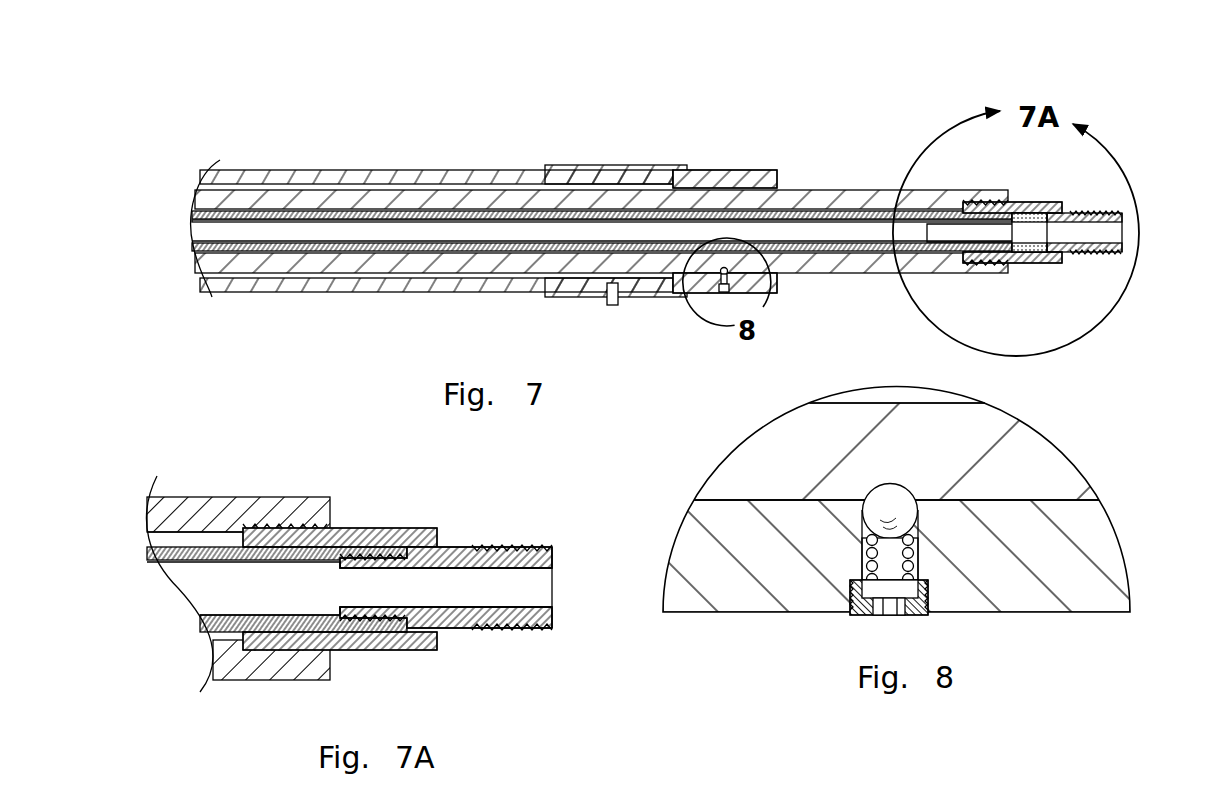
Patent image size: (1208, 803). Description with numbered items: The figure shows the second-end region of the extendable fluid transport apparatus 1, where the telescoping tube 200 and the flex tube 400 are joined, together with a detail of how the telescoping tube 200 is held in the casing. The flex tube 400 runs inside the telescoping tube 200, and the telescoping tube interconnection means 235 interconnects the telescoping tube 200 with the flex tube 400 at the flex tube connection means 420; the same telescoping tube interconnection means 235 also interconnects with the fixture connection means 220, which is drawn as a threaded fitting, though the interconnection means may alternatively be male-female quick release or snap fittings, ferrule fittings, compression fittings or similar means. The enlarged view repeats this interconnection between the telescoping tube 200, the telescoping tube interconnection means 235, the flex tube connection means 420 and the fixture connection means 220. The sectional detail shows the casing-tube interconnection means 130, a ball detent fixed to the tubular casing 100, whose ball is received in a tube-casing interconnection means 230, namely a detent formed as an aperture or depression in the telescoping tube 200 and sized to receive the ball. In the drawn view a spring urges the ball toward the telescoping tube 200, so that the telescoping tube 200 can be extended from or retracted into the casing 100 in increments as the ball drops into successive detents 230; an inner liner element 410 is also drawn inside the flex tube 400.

In FIG. 7, the extendable fluid transport apparatus 1 is at (407, 155).
In FIG. 7, the tubular casing 100 is at (340, 170).
In FIG. 7, the casing-tube interconnection means 130 is at (503, 170).
In FIG. 8, the casing-tube interconnection means 130 is at (868, 615).
In FIG. 7, the telescoping tube 200 is at (252, 263).
In FIG. 7A, the telescoping tube 200 is at (258, 508).
In FIG. 8, the telescoping tube 200 is at (767, 442).
In FIG. 7, the fixture connection means 220 is at (1100, 207).
In FIG. 7A, the fixture connection means 220 is at (505, 547).
In FIG. 7, the tube-casing interconnection means 230 is at (617, 165).
In FIG. 8, the tube-casing interconnection means 230 is at (890, 485).
In FIG. 7, the telescoping tube interconnection means 235 is at (1040, 203).
In FIG. 7A, the telescoping tube interconnection means 235 is at (380, 535).
In FIG. 7, the flex tube 400 is at (345, 235).
In FIG. 7A, the flex tube 400 is at (187, 583).
In FIG. 7, the liner 410 is at (915, 228).
In FIG. 7A, the liner 410 is at (245, 600).
In FIG. 7, the flex tube connection means 420 is at (1037, 232).
In FIG. 7A, the flex tube connection means 420 is at (375, 590).